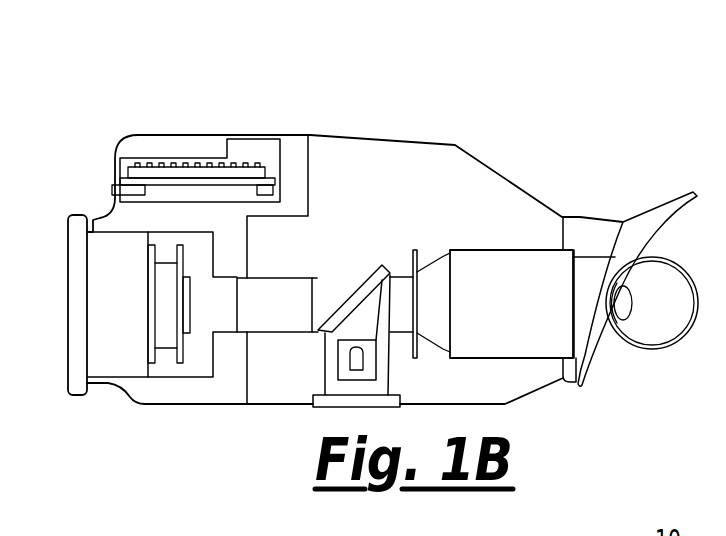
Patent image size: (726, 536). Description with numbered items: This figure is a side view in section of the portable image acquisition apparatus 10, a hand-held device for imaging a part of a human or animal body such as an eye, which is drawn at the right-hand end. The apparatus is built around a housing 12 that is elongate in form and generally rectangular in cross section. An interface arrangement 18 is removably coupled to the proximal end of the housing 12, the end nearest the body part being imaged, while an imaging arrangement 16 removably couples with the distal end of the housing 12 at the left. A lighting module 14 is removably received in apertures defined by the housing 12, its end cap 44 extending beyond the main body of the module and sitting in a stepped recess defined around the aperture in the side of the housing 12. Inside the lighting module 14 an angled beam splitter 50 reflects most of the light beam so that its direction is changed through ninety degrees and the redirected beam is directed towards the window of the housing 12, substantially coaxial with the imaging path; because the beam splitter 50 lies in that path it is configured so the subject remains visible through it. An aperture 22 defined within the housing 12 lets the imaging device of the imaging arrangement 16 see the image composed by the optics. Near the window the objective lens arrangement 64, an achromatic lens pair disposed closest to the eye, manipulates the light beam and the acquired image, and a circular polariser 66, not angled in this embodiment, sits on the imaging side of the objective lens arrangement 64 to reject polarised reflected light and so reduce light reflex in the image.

The portable image acquisition apparatus 10 is at (396, 118).
The housing 12 is at (473, 185).
The lighting module 14 is at (405, 377).
The imaging arrangement 16 is at (116, 355).
The interface arrangement 18 is at (595, 230).
The aperture 22 is at (234, 302).
The end cap 44 is at (330, 403).
The beam splitter 50 is at (353, 302).
The objective lens arrangement 64 is at (522, 273).
The circular polariser 66 is at (418, 318).